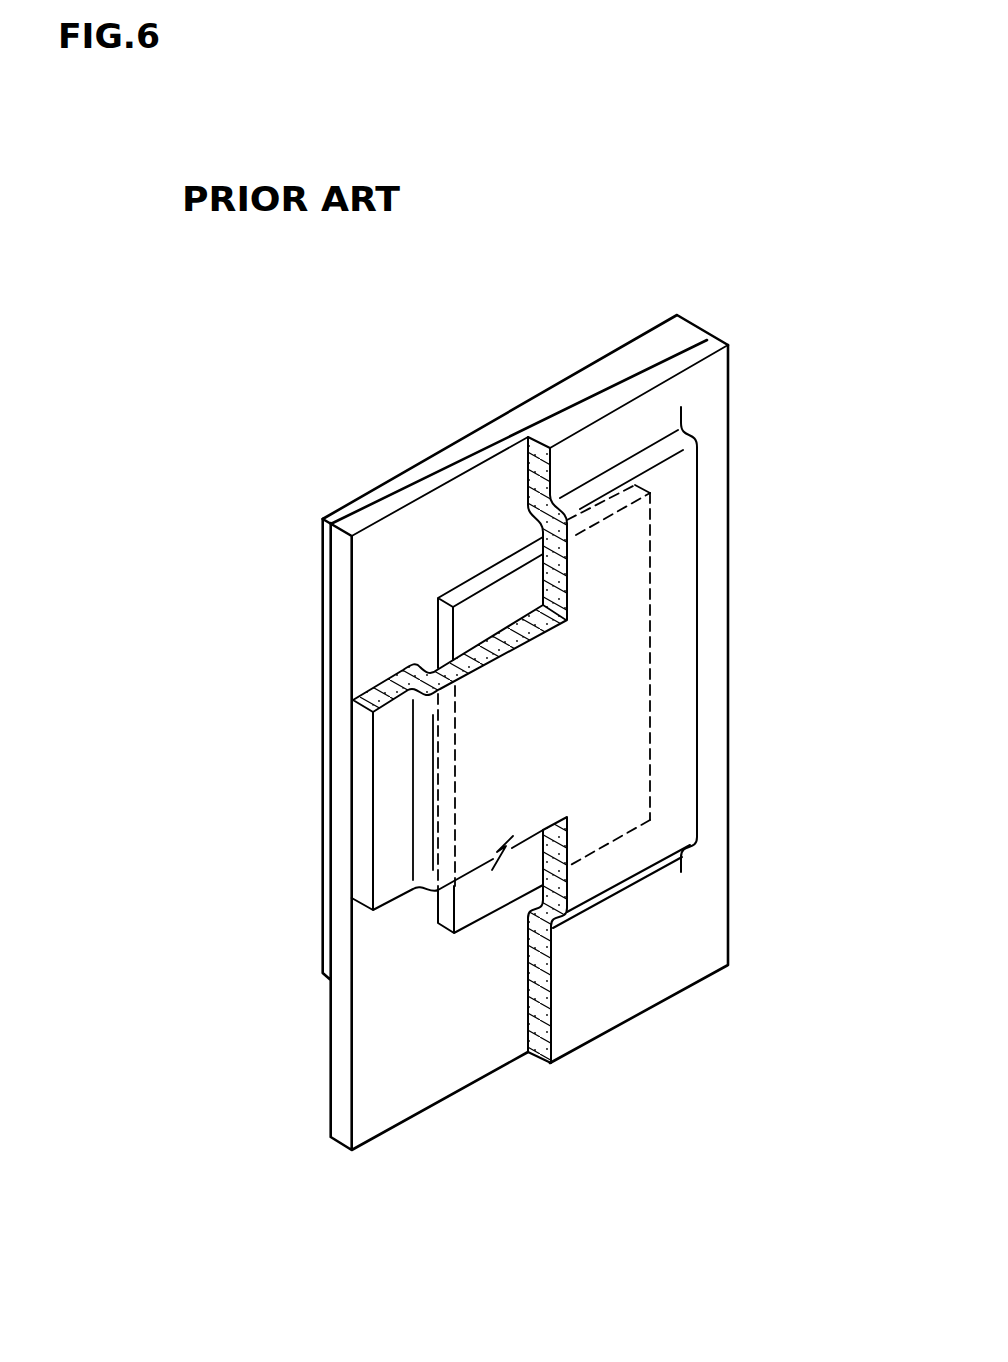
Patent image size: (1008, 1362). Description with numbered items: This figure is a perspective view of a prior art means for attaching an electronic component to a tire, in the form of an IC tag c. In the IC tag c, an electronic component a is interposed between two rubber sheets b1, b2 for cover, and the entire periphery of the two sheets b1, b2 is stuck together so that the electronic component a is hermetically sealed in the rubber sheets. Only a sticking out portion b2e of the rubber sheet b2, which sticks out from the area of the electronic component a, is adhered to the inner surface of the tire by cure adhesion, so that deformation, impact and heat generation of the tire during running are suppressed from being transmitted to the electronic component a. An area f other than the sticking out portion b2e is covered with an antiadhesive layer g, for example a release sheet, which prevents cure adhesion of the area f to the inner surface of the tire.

The electronic component a is at (485, 612).
The rubber sheet b1 is at (640, 985).
The rubber sheet b2 is at (455, 1045).
The sticking out portion b2e is at (314, 995).
The IC tag c is at (541, 708).
The area f is at (314, 524).
The antiadhesive layer g is at (605, 355).